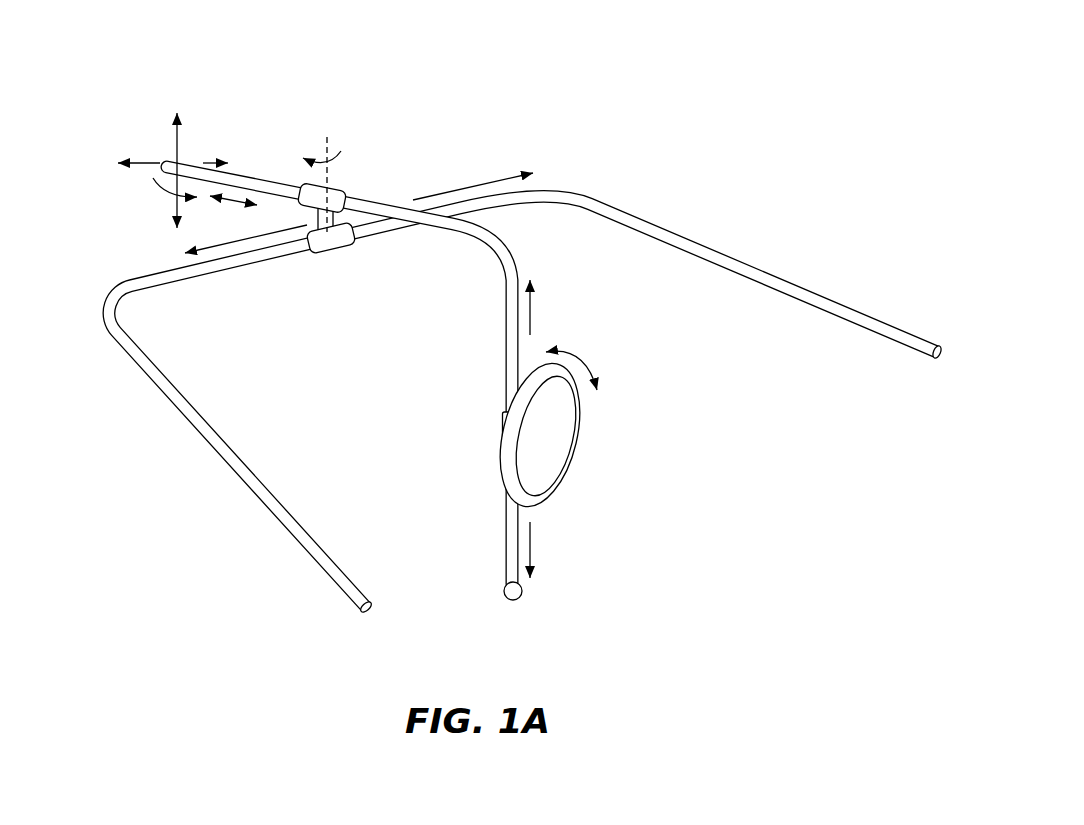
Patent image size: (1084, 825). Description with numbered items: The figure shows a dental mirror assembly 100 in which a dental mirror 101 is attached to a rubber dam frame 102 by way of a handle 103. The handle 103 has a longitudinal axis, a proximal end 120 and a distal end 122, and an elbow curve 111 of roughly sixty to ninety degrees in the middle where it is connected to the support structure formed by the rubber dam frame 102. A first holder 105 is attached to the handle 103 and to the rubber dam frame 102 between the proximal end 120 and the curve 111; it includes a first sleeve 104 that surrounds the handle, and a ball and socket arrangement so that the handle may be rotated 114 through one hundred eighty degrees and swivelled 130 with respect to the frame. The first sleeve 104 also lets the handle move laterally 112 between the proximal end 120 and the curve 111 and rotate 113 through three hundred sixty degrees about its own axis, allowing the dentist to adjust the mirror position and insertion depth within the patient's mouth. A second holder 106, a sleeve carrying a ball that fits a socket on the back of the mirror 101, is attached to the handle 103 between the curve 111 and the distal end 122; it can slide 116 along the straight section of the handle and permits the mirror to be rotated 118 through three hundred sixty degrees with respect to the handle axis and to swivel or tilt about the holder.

The dental mirror assembly 100 is at (605, 34).
The dental mirror 101 is at (550, 440).
The rubber dam frame 102 is at (698, 247).
The handle 103 is at (240, 173).
The first sleeve 104 is at (343, 193).
The first holder 105 is at (328, 252).
The second holder 106 is at (500, 425).
The elbow curve 111 is at (518, 253).
The lateral movement direction 112 is at (238, 227).
The handle rotation direction 113 is at (158, 208).
The rotation direction 114 is at (380, 148).
The mirror sliding direction 116 is at (580, 321).
The mirror rotation direction 118 is at (636, 362).
The proximal end 120 is at (100, 137).
The distal end 122 is at (795, 573).
The swivel direction 130 is at (232, 129).